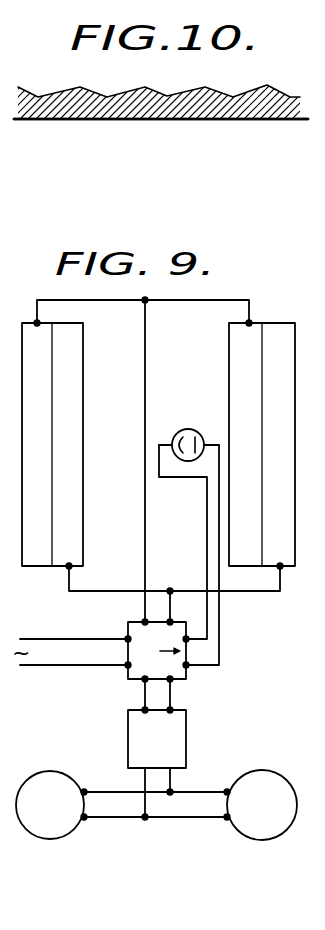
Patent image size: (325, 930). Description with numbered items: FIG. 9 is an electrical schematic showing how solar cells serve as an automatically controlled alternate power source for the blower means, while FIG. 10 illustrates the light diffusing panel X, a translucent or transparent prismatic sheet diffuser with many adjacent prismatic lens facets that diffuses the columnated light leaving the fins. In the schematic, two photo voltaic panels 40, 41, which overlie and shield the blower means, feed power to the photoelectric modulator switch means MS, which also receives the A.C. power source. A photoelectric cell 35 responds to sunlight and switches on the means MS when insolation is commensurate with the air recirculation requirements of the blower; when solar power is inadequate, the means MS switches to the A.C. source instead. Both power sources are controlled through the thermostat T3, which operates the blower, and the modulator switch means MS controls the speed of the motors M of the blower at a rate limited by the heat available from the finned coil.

In FIG. 10, the light diffusing panel X is at (152, 120).
In FIG. 9, the photo voltaic panel 40 is at (73, 388).
In FIG. 9, the photo voltaic panel 41 is at (237, 369).
In FIG. 9, the photoelectric cell 35 is at (199, 430).
In FIG. 9, the photoelectric modulator switch means MS is at (186, 651).
In FIG. 9, the thermostat T3 is at (157, 739).
In FIG. 9, the motor M is at (156, 805).